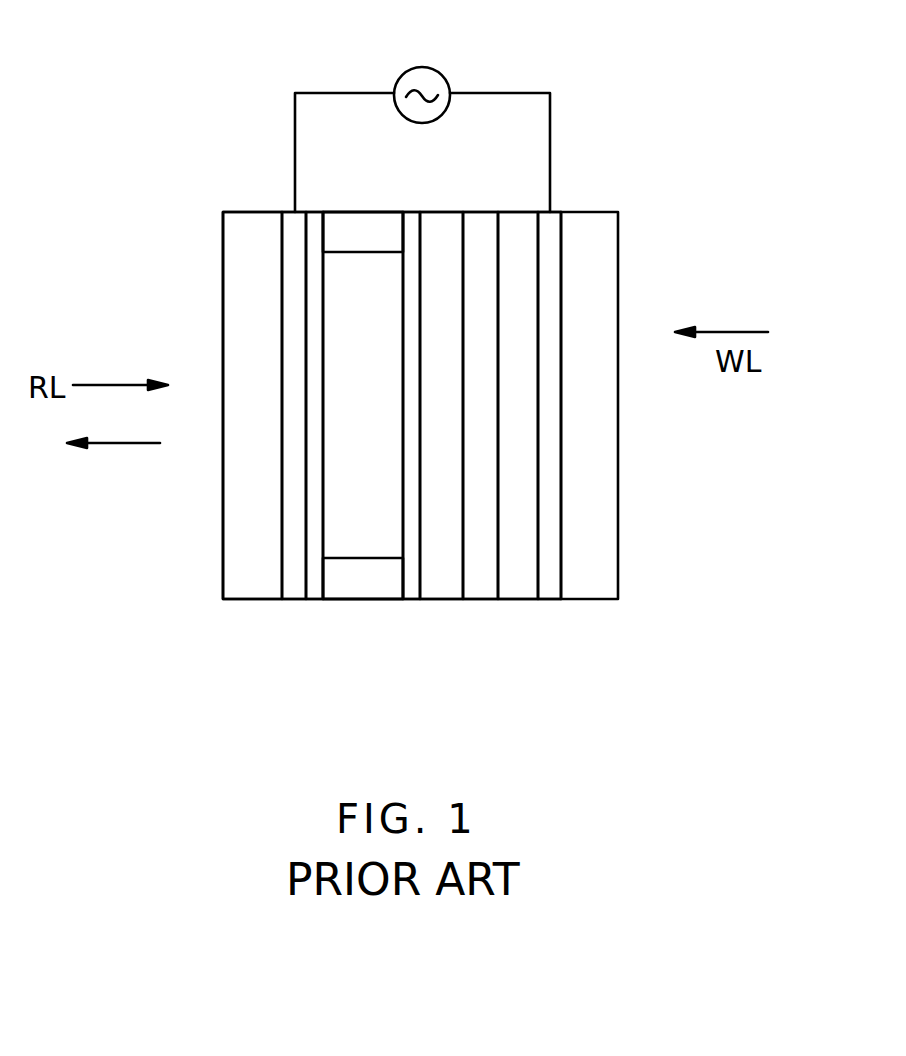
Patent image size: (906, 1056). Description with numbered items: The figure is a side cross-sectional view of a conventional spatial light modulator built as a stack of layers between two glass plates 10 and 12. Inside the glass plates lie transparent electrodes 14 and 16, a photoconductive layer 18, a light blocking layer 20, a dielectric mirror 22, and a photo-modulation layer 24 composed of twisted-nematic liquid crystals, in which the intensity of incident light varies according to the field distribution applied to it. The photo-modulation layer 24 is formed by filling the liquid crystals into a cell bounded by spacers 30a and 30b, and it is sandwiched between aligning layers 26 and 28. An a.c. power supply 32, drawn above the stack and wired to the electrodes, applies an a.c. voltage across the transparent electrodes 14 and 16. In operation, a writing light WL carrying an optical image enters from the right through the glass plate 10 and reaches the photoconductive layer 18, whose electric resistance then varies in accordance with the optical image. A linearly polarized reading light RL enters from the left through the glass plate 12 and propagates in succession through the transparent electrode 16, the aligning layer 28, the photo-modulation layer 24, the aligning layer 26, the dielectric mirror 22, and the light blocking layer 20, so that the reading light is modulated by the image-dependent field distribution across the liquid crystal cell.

The glass plate 10 is at (603, 222).
The glass plate 12 is at (237, 220).
The transparent electrode 14 is at (552, 222).
The transparent electrode 16 is at (290, 220).
The photoconductive layer 18 is at (517, 222).
The light blocking layer 20 is at (478, 222).
The dielectric mirror 22 is at (445, 587).
The photo-modulation layer 24 is at (363, 540).
The aligning layer 26 is at (410, 590).
The aligning layer 28 is at (312, 588).
The spacer 30a is at (353, 233).
The spacer 30b is at (337, 587).
The a.c. power supply 32 is at (420, 66).